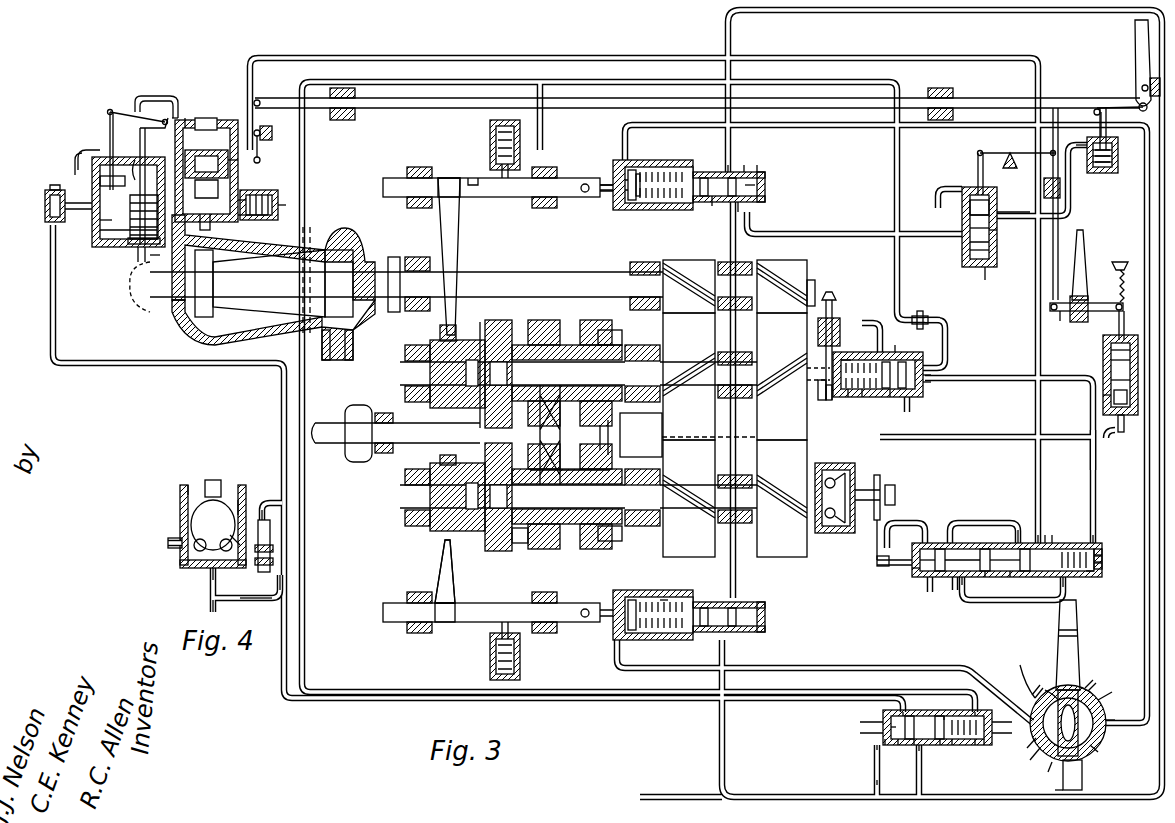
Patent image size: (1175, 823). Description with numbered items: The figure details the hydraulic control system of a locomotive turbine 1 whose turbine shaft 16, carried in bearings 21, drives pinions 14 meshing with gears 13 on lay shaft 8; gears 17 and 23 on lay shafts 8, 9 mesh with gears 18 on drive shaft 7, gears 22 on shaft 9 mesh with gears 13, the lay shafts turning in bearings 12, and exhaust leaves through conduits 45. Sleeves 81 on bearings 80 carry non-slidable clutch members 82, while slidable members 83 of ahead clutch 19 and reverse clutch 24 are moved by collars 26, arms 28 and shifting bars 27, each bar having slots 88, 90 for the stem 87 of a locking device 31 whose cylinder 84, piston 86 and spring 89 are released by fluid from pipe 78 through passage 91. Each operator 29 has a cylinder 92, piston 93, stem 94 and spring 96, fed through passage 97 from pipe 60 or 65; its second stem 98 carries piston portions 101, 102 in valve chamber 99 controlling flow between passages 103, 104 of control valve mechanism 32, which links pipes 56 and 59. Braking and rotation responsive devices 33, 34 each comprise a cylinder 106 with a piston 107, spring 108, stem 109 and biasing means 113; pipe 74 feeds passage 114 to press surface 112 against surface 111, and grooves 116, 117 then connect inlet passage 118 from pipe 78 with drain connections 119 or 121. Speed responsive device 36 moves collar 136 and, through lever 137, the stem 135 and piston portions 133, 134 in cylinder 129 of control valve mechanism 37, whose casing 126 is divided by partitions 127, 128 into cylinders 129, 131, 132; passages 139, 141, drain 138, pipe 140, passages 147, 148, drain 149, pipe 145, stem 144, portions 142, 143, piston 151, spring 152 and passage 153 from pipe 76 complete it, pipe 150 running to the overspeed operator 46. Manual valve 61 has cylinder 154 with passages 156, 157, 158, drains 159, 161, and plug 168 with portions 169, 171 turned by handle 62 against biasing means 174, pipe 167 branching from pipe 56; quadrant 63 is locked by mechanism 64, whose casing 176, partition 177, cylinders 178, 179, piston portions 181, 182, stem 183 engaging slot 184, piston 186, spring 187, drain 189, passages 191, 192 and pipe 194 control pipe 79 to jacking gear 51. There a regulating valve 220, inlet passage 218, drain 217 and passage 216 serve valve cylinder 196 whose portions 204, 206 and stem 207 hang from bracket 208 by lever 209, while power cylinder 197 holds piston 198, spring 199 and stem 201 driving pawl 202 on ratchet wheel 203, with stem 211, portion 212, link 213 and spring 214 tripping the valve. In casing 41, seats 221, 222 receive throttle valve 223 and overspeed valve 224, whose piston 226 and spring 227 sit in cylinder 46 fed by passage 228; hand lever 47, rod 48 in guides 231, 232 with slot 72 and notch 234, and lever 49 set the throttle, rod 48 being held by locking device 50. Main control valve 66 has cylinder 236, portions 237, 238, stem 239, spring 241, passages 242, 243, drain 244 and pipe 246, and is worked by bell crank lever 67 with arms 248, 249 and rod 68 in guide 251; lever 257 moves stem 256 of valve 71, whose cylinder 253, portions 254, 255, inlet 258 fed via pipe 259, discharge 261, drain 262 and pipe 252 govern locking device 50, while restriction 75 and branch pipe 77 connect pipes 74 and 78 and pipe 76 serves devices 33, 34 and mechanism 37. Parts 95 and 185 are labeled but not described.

In FIG. 3, the turbine 1 is at (278, 286).
In FIG. 3, the drive shaft 7 is at (412, 444).
In FIG. 3, the lay shaft 8 is at (398, 373).
In FIG. 3, the lay shaft 9 is at (398, 495).
In FIG. 3, the bearings 12 is at (558, 439).
In FIG. 3, the gears 13 is at (735, 376).
In FIG. 3, the pinions 14 is at (739, 286).
In FIG. 3, the turbine shaft 16 is at (406, 284).
In FIG. 3, the gears 17 is at (547, 321).
In FIG. 3, the gears 18 is at (538, 432).
In FIG. 3, the positive ahead clutch 19 is at (481, 366).
In FIG. 3, the bearings 21 is at (575, 276).
In FIG. 3, the gears 22 is at (735, 498).
In FIG. 3, the gears 23 is at (572, 550).
In FIG. 3, the positive reverse clutch 24 is at (474, 561).
In FIG. 3, the shifting collar 26 is at (449, 444).
In FIG. 3, the clutch shifting bar 27 is at (508, 197).
In FIG. 3, the laterally extending arm 28 is at (455, 243).
In FIG. 3, the fluid actuated operator 29 is at (645, 402).
In FIG. 3, the fluid actuated locking device 31 is at (492, 394).
In FIG. 3, the control valve mechanism 32 is at (790, 193).
In FIG. 3, the combined braking and rotation responsive device 33 is at (867, 340).
In FIG. 3, the combined braking and rotation responsive device 34 is at (647, 443).
In FIG. 3, the speed responsive device 36 is at (847, 490).
In FIG. 3, the control valve mechanism 37 is at (969, 522).
In FIG. 3, the control valve casing 41 is at (232, 136).
In FIG. 3, the conduits 45 is at (336, 362).
In FIG. 3, the fluid actuated valve operator 46 is at (270, 202).
In FIG. 3, the hand lever 47 is at (1136, 33).
In FIG. 3, the slidably mounted rod 48 is at (1018, 100).
In FIG. 3, the pivoted lever 49 is at (270, 131).
In FIG. 3, the fluid actuated locking device 50 is at (1113, 155).
In FIG. 3, the jacking gear mechanism 51 is at (102, 146).
In FIG. 3, the pipe 56 is at (901, 403).
In FIG. 3, the pipe 59 is at (739, 400).
In FIG. 3, the pipe 60 is at (873, 418).
In FIG. 3, the valve 61 is at (1089, 653).
In FIG. 3, the hand lever 62 is at (1075, 620).
In FIG. 3, the notched quadrant 63 is at (1021, 672).
In FIG. 3, the combined locking device and control valve mechanism 64 is at (937, 720).
In FIG. 3, the pipe 65 is at (813, 681).
In FIG. 3, the main control valve 66 is at (1089, 352).
In FIG. 3, the hand operated lever 67 is at (1083, 235).
In FIG. 3, the slidable link 68 is at (1059, 269).
In FIG. 3, the control valve 71 is at (1014, 257).
In FIG. 3, the slot 72 is at (1056, 108).
In FIG. 3, the pipe 74 is at (986, 448).
In FIG. 4, the pipe 74 is at (224, 607).
In FIG. 3, the restriction 75 is at (928, 316).
In FIG. 4, the restriction 75 is at (271, 592).
In FIG. 3, the pipe 76 is at (1080, 468).
In FIG. 3, the branch pipe 77 is at (945, 342).
In FIG. 4, the branch pipe 77 is at (256, 606).
In FIG. 3, the pipe 78 is at (661, 388).
In FIG. 4, the pipe 78 is at (271, 546).
In FIG. 3, the pipe 79 is at (478, 474).
In FIG. 3, the bearings 80 is at (567, 440).
In FIG. 3, the concentric sleeve 81 is at (567, 440).
In FIG. 3, the non-slidable clutch member 82 is at (500, 434).
In FIG. 3, the axially slidable clutch member 83 is at (456, 391).
In FIG. 3, the cylinder 84 is at (1114, 146).
In FIG. 3, the piston 86 is at (809, 151).
In FIG. 3, the stem 87 is at (1100, 107).
In FIG. 3, the slot 88 is at (517, 405).
In FIG. 3, the spring 89 is at (803, 398).
In FIG. 3, the slot 90 is at (469, 413).
In FIG. 3, the fluid passage 91 is at (1080, 144).
In FIG. 3, the cylinder 92 is at (659, 398).
In FIG. 3, the piston 93 is at (641, 383).
In FIG. 3, the stem 94 is at (587, 197).
In FIG. 3, the port 95 is at (670, 585).
In FIG. 3, the compression spring 96 is at (658, 206).
In FIG. 3, the fluid passage 97 is at (619, 159).
In FIG. 3, the second stem 98 is at (709, 422).
In FIG. 3, the valve chamber 99 is at (746, 202).
In FIG. 3, the piston portion 101 is at (711, 370).
In FIG. 3, the piston portion 102 is at (758, 174).
In FIG. 3, the passage 103 is at (749, 405).
In FIG. 3, the passage 104 is at (734, 218).
In FIG. 3, the cylinder 106 is at (855, 348).
In FIG. 4, the cylinder 106 is at (244, 500).
In FIG. 3, the combined power piston and valve structure 107 is at (891, 401).
In FIG. 4, the combined power piston and valve structure 107 is at (213, 522).
In FIG. 3, the compression spring 108 is at (863, 401).
In FIG. 3, the stem 109 is at (845, 402).
In FIG. 4, the stem 109 is at (214, 480).
In FIG. 3, the braking surface 111 is at (720, 403).
In FIG. 3, the braking surface 112 is at (718, 427).
In FIG. 3, the biasing means 113 is at (836, 322).
In FIG. 3, the passage 114 is at (939, 378).
In FIG. 4, the passage 114 is at (216, 584).
In FIG. 3, the groove 116 is at (939, 390).
In FIG. 4, the groove 116 is at (193, 480).
In FIG. 3, the groove 117 is at (885, 345).
In FIG. 4, the groove 117 is at (253, 517).
In FIG. 3, the fluid inlet passage 118 is at (929, 347).
In FIG. 4, the fluid inlet passage 118 is at (208, 571).
In FIG. 3, the drain connection 119 is at (924, 406).
In FIG. 4, the drain connection 119 is at (173, 534).
In FIG. 3, the drain connection 121 is at (883, 333).
In FIG. 4, the drain connection 121 is at (275, 512).
In FIG. 3, the casing 126 is at (918, 528).
In FIG. 3, the partition 127 is at (988, 578).
In FIG. 3, the partition 128 is at (1081, 537).
In FIG. 3, the cylinder 129 is at (935, 582).
In FIG. 3, the cylinder 131 is at (1021, 523).
In FIG. 3, the cylinder 132 is at (1108, 577).
In FIG. 3, the piston portion 133 is at (896, 550).
In FIG. 3, the piston portion 134 is at (963, 578).
In FIG. 3, the stem 135 is at (910, 567).
In FIG. 3, the axially movable collar 136 is at (878, 482).
In FIG. 3, the pivoted lever 137 is at (883, 563).
In FIG. 3, the drain connection 138 is at (902, 579).
In FIG. 3, the fluid passage 139 is at (962, 546).
In FIG. 3, the pipe 140 is at (984, 523).
In FIG. 3, the fluid passage 141 is at (957, 585).
In FIG. 3, the piston portion 142 is at (1013, 578).
In FIG. 3, the piston portion 143 is at (1057, 534).
In FIG. 3, the stem 144 is at (1059, 527).
In FIG. 3, the pipe 145 is at (1012, 591).
In FIG. 3, the fluid passage 147 is at (1004, 546).
In FIG. 3, the fluid passage 148 is at (1055, 521).
In FIG. 3, the drain connection 149 is at (1079, 585).
In FIG. 3, the pipe 150 is at (660, 291).
In FIG. 3, the piston 151 is at (1113, 551).
In FIG. 3, the compression spring 152 is at (1113, 561).
In FIG. 3, the fluid passage 153 is at (1098, 540).
In FIG. 3, the cylinder 154 is at (1098, 681).
In FIG. 3, the fluid passage 156 is at (1124, 711).
In FIG. 3, the fluid passage 157 is at (1053, 775).
In FIG. 3, the fluid passage 158 is at (1023, 745).
In FIG. 3, the drain connection 159 is at (1037, 682).
In FIG. 3, the drain connection 161 is at (1116, 690).
In FIG. 3, the branch pipe 167 is at (1064, 794).
In FIG. 3, the plug member 168 is at (1030, 772).
In FIG. 3, the cylindrical portion 169 is at (1108, 747).
In FIG. 3, the cylindrical portion 171 is at (1047, 673).
In FIG. 3, the biasing means 174 is at (1087, 774).
In FIG. 3, the casing 176 is at (919, 705).
In FIG. 3, the partition 177 is at (959, 707).
In FIG. 3, the valve cylinder 178 is at (883, 748).
In FIG. 3, the piston cylinder 179 is at (953, 748).
In FIG. 3, the piston portion 181 is at (901, 749).
In FIG. 3, the piston portion 182 is at (928, 759).
In FIG. 3, the stem 183 is at (954, 748).
In FIG. 3, the slot 184 is at (994, 713).
In FIG. 3, the port 185 is at (978, 696).
In FIG. 3, the piston member 186 is at (981, 756).
In FIG. 3, the compression spring 187 is at (953, 756).
In FIG. 3, the drain connection 189 is at (879, 733).
In FIG. 3, the fluid passage 191 is at (874, 717).
In FIG. 3, the fluid passage 192 is at (896, 759).
In FIG. 3, the pipe 194 is at (906, 782).
In FIG. 3, the valve cylinder 196 is at (111, 242).
In FIG. 3, the power cylinder 197 is at (132, 249).
In FIG. 3, the piston 198 is at (137, 161).
In FIG. 3, the compression spring 199 is at (162, 218).
In FIG. 3, the piston stem 201 is at (168, 250).
In FIG. 3, the pawl 202 is at (124, 263).
In FIG. 3, the ratchet wheel 203 is at (128, 287).
In FIG. 3, the piston portion 204 is at (83, 168).
In FIG. 3, the piston portion 206 is at (89, 230).
In FIG. 3, the stem 207 is at (110, 118).
In FIG. 3, the fixed bracket 208 is at (151, 128).
In FIG. 3, the lever 209 is at (134, 108).
In FIG. 3, the stem 211 is at (133, 186).
In FIG. 3, the laterally extending portion 212 is at (201, 116).
In FIG. 3, the U-shaped link 213 is at (156, 102).
In FIG. 3, the spring 214 is at (185, 106).
In FIG. 3, the passage 216 is at (110, 177).
In FIG. 3, the drain connection 217 is at (86, 162).
In FIG. 3, the fluid inlet passage 218 is at (81, 216).
In FIG. 3, the regulating valve 220 is at (45, 206).
In FIG. 3, the valve seat 221 is at (218, 156).
In FIG. 3, the valve seat 222 is at (211, 226).
In FIG. 3, the throttle valve 223 is at (238, 168).
In FIG. 3, the overspeed valve 224 is at (212, 188).
In FIG. 3, the piston 226 is at (261, 225).
In FIG. 3, the compression spring 227 is at (293, 211).
In FIG. 3, the fluid inlet passage 228 is at (260, 187).
In FIG. 3, the guide 231 is at (355, 116).
In FIG. 3, the guide 232 is at (945, 98).
In FIG. 3, the notch 234 is at (1118, 108).
In FIG. 3, the cylinder 236 is at (1109, 335).
In FIG. 3, the piston portion 237 is at (1104, 350).
In FIG. 3, the piston portion 238 is at (1110, 364).
In FIG. 3, the stem 239 is at (1135, 324).
In FIG. 3, the biasing spring 241 is at (1133, 282).
In FIG. 3, the fluid inlet passage 242 is at (1123, 397).
In FIG. 3, the discharge passage 243 is at (1102, 396).
In FIG. 3, the drain connection 244 is at (1109, 439).
In FIG. 3, the pipe 246 is at (1135, 424).
In FIG. 3, the arm 248 is at (1086, 301).
In FIG. 3, the second arm 249 is at (1060, 318).
In FIG. 3, the guide 251 is at (1062, 184).
In FIG. 3, the pipe 252 is at (1015, 204).
In FIG. 3, the cylinder 253 is at (1006, 267).
In FIG. 3, the piston portion 254 is at (959, 255).
In FIG. 3, the piston portion 255 is at (959, 212).
In FIG. 3, the stem 256 is at (997, 176).
In FIG. 3, the pivoted lever 257 is at (1017, 144).
In FIG. 3, the fluid inlet passage 258 is at (959, 239).
In FIG. 3, the pipe 259 is at (854, 223).
In FIG. 3, the fluid discharge passage 261 is at (1008, 237).
In FIG. 3, the drain connection 262 is at (943, 192).